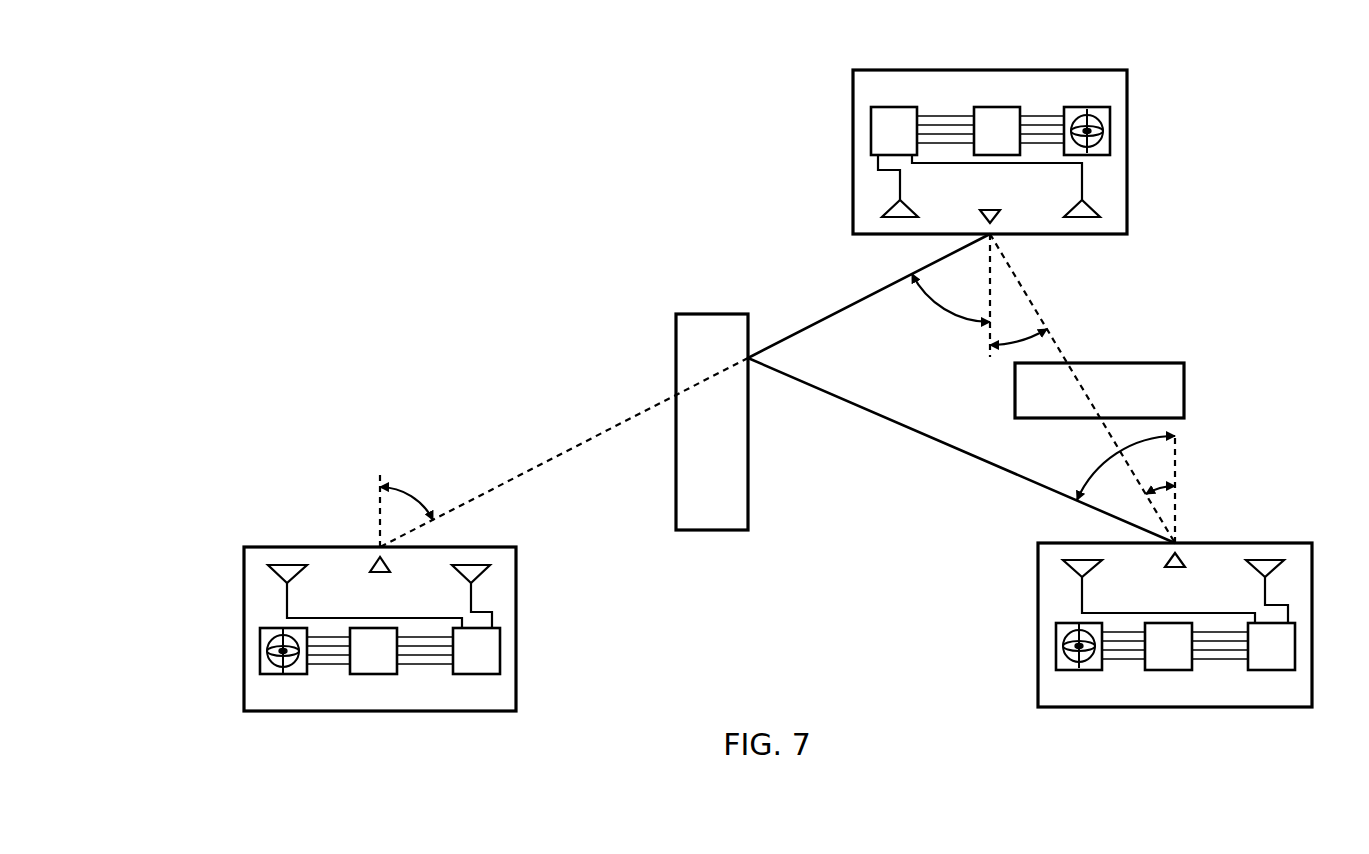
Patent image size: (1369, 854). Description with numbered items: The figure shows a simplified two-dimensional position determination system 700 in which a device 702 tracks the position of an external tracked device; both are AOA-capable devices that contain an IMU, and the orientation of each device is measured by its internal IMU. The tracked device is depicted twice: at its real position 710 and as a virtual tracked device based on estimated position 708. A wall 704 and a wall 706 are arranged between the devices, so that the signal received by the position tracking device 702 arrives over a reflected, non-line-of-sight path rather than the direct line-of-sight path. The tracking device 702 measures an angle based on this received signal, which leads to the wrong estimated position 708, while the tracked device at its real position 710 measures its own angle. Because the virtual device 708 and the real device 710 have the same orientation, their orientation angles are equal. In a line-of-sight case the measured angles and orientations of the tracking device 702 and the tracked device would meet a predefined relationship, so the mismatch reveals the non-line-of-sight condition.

The position determination system 700 is at (422, 226).
The position tracking device 702 is at (852, 148).
The wall 704 is at (712, 422).
The wall 706 is at (1099, 390).
The virtual tracked device based on estimated position 708 is at (244, 620).
The tracked device real position 710 is at (1038, 607).